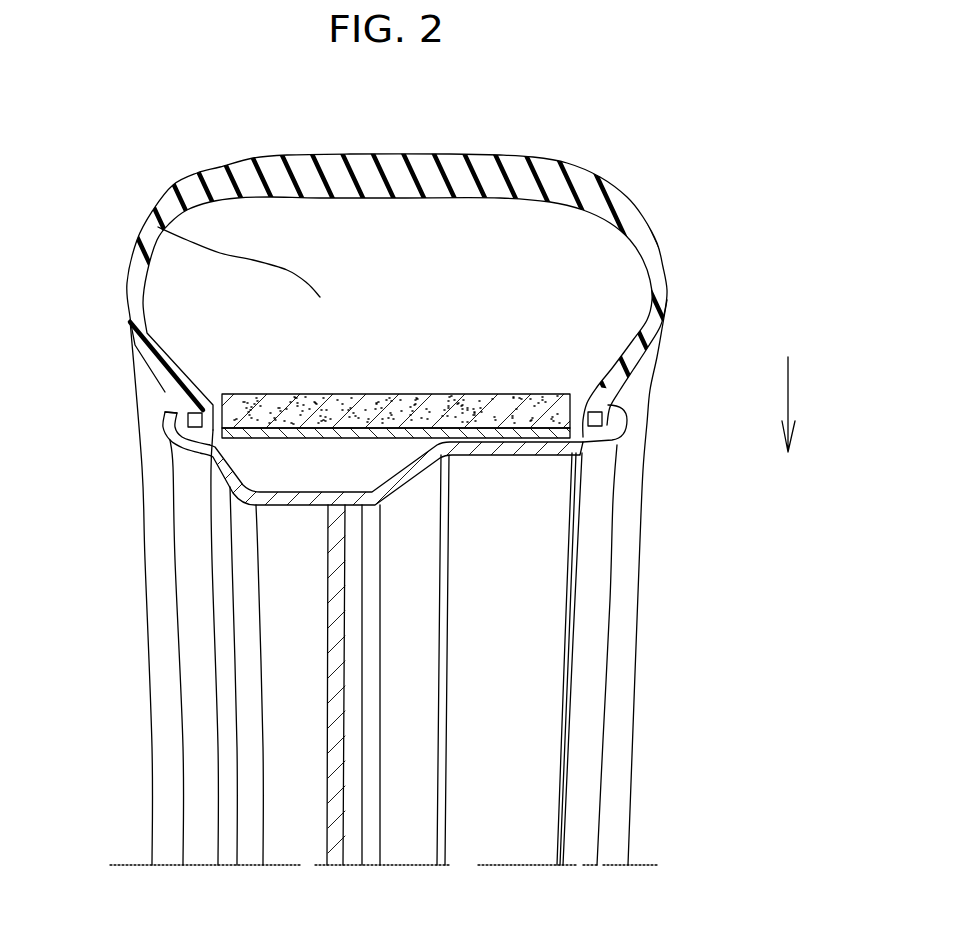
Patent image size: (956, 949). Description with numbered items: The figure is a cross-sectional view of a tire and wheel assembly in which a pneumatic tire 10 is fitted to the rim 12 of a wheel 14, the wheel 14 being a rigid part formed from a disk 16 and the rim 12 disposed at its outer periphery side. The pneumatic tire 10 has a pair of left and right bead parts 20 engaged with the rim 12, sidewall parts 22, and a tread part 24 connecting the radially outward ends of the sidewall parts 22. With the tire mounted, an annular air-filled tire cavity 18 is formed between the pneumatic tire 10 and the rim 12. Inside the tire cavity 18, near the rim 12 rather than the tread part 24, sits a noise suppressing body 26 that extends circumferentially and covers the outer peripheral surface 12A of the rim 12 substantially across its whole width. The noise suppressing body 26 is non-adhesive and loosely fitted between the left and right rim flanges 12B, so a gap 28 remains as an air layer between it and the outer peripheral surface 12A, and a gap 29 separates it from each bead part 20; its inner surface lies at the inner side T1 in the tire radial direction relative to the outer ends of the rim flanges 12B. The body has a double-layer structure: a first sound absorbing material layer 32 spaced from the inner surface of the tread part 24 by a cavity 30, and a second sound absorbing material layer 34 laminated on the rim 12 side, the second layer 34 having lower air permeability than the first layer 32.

The pneumatic tire 10 is at (615, 176).
The tread part 24 is at (424, 175).
The sidewall parts 22 is at (127, 290).
The bead parts 20 is at (183, 398).
The tire cavity 18 is at (607, 249).
The cavity 30 is at (150, 217).
The noise suppressing body 26 is at (385, 388).
The first sound absorbing material layer 32 is at (443, 404).
The gap 28 is at (578, 443).
The rim 12 is at (240, 507).
The second sound absorbing material layer 34 is at (478, 456).
The outer peripheral surface 12A is at (412, 458).
The rim flanges 12B is at (172, 433).
The gap 29 is at (214, 410).
The wheel 14 is at (580, 583).
The disk 16 is at (327, 738).
The inner side in the tire radial direction T1 is at (804, 404).